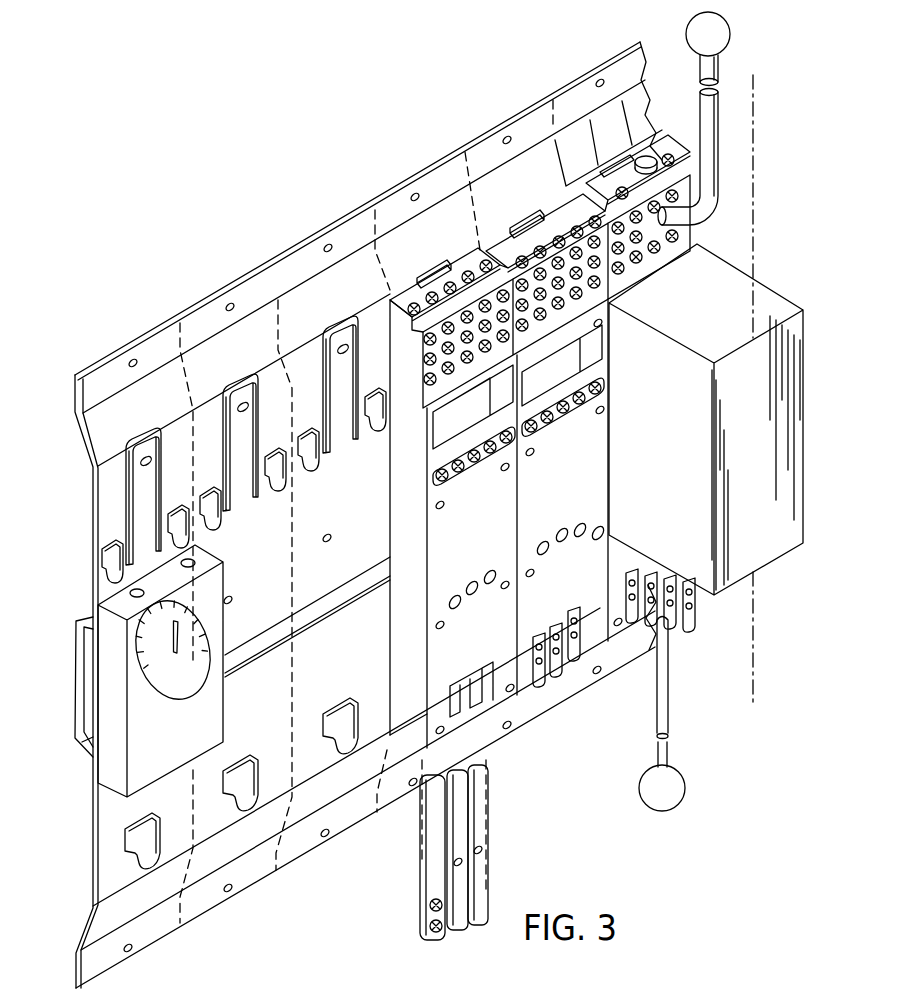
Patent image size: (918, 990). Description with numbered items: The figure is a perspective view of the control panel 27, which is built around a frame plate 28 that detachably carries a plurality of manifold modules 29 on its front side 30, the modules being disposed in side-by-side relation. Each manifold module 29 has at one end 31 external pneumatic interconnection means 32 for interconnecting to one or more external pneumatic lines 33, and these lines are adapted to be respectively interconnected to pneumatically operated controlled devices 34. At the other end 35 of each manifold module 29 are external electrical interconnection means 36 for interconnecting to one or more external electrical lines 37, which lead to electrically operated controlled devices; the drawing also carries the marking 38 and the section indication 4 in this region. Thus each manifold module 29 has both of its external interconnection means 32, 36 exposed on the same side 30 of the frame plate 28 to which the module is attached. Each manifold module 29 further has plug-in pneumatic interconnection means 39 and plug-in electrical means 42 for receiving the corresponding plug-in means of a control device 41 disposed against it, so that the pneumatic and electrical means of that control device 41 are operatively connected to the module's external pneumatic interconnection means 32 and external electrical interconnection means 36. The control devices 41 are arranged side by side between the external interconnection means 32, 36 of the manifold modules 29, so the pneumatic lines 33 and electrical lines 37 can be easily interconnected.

The section line 4- 4 is at (732, 84).
The control panel 27 is at (764, 248).
The frame plate 28 is at (262, 295).
The manifold modules 29 is at (440, 566).
The front side 30 is at (377, 315).
The one end 31 is at (522, 268).
The external pneumatic interconnection means 32 is at (422, 371).
The external pneumatic lines 33 is at (720, 180).
The pneumatically operated controlled devices 34 is at (743, 31).
The other end 35 is at (408, 738).
The external electrical interconnection means 36 is at (560, 668).
The external electrical lines 37 is at (669, 682).
The knob 38 is at (686, 786).
The plug-in pneumatic interconnection means 39 is at (477, 434).
The control device 41 is at (788, 449).
The plug-in electrical means 42 is at (480, 594).